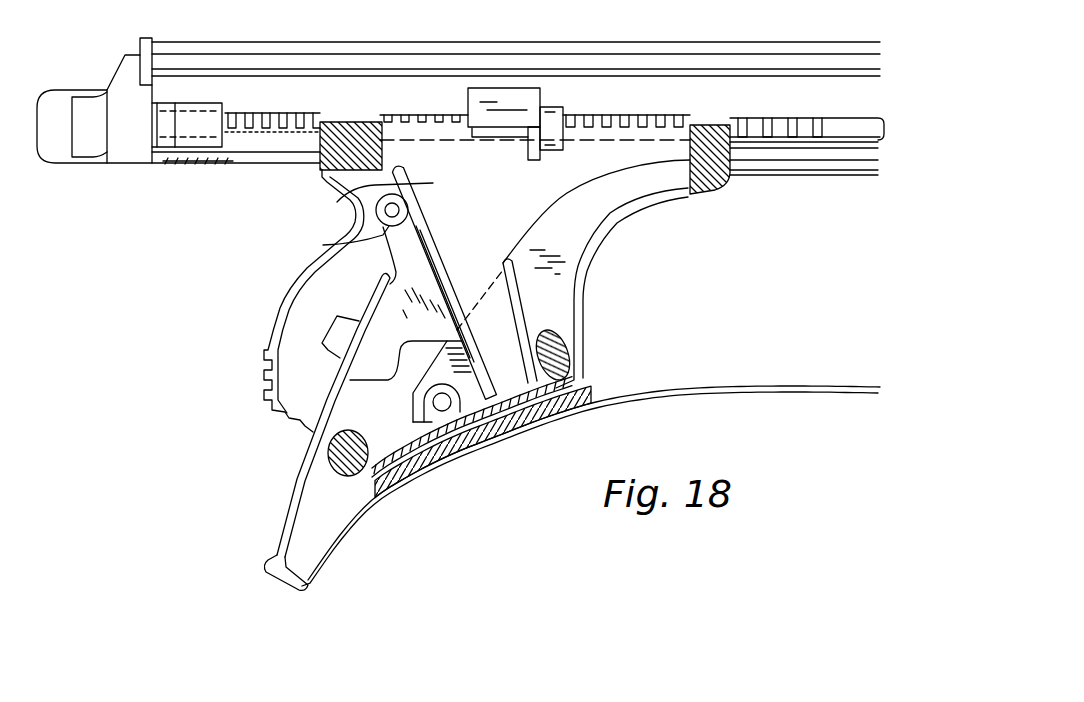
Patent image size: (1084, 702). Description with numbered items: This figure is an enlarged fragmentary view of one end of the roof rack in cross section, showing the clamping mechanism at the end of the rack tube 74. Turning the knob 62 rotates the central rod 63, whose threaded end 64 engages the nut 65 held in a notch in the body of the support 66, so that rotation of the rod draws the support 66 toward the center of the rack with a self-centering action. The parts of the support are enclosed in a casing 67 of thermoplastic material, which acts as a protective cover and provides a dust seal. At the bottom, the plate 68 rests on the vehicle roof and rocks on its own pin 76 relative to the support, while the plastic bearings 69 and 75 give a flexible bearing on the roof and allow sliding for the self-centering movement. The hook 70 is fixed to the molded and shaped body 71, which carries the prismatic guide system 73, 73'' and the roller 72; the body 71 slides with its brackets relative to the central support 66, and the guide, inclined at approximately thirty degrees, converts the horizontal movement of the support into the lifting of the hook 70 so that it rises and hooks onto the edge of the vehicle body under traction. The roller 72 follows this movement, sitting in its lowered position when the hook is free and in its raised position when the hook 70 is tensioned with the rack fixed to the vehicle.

The knob 62 is at (62, 143).
The central rod 63 is at (790, 117).
The threaded end 64 is at (268, 112).
The nut 65 is at (515, 96).
The support 66 is at (340, 202).
The casing 67 is at (590, 283).
The plate 68 is at (410, 476).
The plastic bearing 69 is at (480, 446).
The hook 70 is at (295, 583).
The molded and shaped body 71 is at (400, 297).
The roller 72 is at (327, 243).
The prismatic guide system 73 is at (516, 322).
The push rod 73'' is at (445, 282).
The guide rails 74 is at (702, 43).
The plastic bearing 75 is at (340, 463).
The pin 76 is at (433, 405).